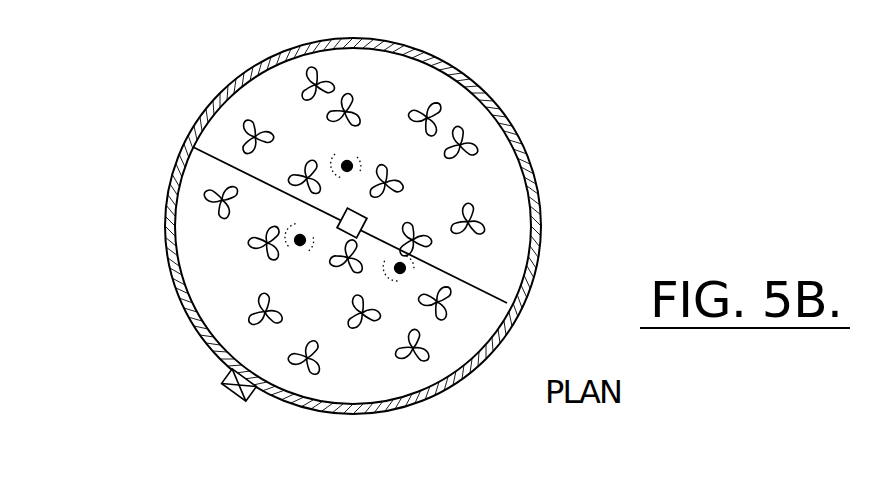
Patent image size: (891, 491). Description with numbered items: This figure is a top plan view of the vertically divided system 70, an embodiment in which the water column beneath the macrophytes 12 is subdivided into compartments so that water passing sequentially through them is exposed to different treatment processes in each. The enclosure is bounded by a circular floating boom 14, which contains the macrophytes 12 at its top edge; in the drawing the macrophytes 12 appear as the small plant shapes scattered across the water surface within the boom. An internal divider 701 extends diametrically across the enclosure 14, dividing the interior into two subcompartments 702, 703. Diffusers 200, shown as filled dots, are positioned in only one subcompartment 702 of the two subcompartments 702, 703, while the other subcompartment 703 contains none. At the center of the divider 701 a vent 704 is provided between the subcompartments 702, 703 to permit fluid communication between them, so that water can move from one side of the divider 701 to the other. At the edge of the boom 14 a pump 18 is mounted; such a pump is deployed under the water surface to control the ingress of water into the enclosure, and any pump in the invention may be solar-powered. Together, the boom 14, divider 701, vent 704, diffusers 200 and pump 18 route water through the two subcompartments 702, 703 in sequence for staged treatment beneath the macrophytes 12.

The vertically divided system 70 is at (452, 226).
The floating boom 14 is at (477, 83).
The subcompartment 702 is at (353, 238).
The subcompartment 703 is at (461, 40).
The macrophytes 12 is at (471, 144).
The diffusers 200 is at (257, 201).
The internal divider 701 is at (406, 225).
The vent 704 is at (482, 185).
The pump 18 is at (217, 372).